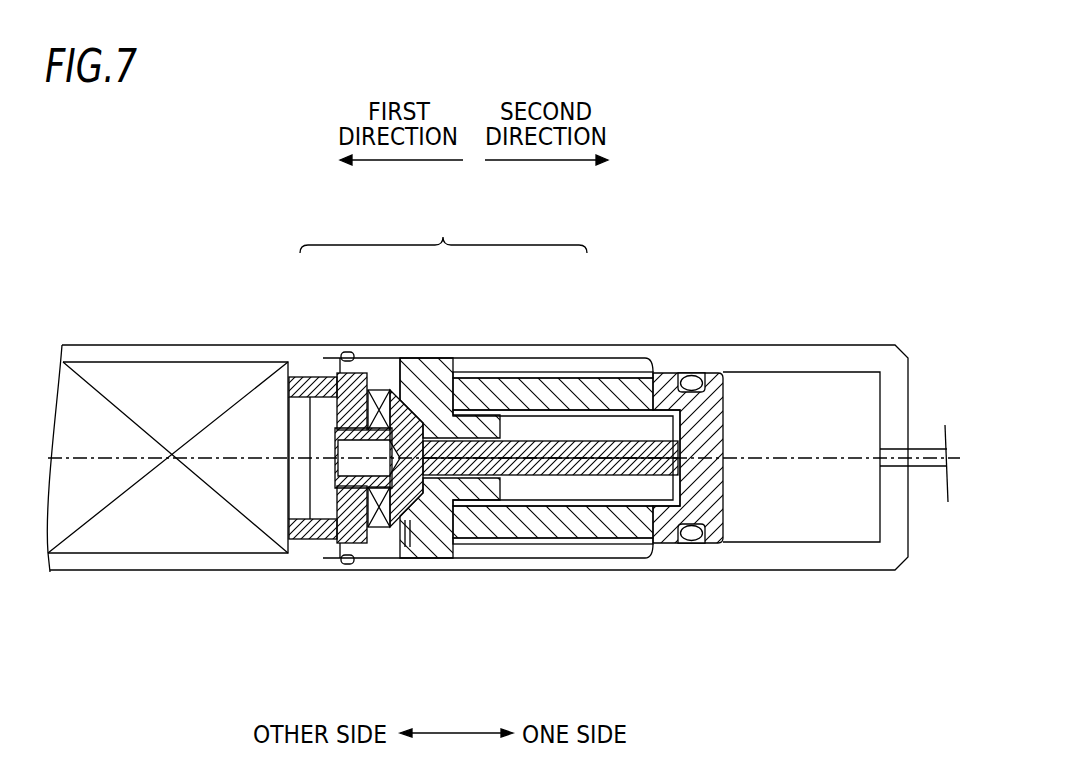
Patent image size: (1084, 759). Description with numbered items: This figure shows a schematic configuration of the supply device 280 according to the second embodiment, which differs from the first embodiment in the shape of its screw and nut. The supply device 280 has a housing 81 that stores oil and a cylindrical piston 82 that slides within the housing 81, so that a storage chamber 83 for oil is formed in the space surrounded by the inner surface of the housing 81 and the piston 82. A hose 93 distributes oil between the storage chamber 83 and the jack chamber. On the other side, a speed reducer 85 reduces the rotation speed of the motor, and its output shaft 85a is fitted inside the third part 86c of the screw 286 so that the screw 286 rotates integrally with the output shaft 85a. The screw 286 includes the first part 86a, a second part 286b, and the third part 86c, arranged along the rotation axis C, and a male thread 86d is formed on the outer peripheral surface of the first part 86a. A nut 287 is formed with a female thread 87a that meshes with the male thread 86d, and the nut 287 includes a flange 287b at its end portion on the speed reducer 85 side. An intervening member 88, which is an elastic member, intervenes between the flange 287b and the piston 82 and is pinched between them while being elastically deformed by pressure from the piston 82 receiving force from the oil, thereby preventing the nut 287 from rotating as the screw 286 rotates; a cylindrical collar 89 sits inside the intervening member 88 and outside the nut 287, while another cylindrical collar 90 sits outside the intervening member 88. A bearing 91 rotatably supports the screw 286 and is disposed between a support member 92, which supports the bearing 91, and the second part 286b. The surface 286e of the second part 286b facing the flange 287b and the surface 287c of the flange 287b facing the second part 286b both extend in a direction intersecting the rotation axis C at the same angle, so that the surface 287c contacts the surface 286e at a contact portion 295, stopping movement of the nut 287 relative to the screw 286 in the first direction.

The supply device 280 is at (670, 232).
The screw 286 is at (443, 226).
The housing 81 is at (807, 345).
The piston 82 is at (707, 373).
The storage chamber 83 is at (815, 447).
The speed reducer 85 is at (150, 362).
The output shaft 85a is at (340, 403).
The first part 86a is at (553, 395).
The third part 86c is at (353, 403).
The male thread 86d is at (635, 440).
The female thread 87a is at (490, 467).
The intervening member 88 is at (585, 528).
The collar 89 is at (605, 505).
The collar 90 is at (640, 538).
The bearing 91 is at (365, 540).
The support member 92 is at (313, 543).
The hose 93 is at (927, 448).
The contact portion 295 is at (397, 387).
The second part 286b is at (390, 398).
The surface 286e is at (417, 393).
The nut 287 is at (470, 497).
The flange 287b is at (413, 518).
The surface 287c is at (417, 515).
The rotation axis C is at (786, 463).